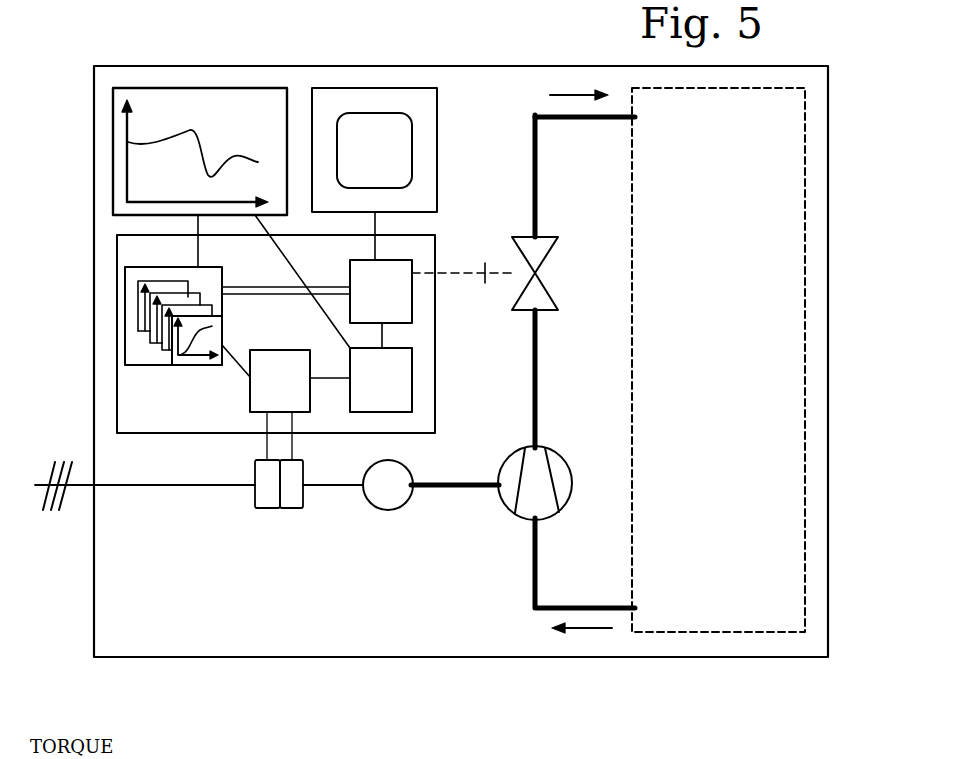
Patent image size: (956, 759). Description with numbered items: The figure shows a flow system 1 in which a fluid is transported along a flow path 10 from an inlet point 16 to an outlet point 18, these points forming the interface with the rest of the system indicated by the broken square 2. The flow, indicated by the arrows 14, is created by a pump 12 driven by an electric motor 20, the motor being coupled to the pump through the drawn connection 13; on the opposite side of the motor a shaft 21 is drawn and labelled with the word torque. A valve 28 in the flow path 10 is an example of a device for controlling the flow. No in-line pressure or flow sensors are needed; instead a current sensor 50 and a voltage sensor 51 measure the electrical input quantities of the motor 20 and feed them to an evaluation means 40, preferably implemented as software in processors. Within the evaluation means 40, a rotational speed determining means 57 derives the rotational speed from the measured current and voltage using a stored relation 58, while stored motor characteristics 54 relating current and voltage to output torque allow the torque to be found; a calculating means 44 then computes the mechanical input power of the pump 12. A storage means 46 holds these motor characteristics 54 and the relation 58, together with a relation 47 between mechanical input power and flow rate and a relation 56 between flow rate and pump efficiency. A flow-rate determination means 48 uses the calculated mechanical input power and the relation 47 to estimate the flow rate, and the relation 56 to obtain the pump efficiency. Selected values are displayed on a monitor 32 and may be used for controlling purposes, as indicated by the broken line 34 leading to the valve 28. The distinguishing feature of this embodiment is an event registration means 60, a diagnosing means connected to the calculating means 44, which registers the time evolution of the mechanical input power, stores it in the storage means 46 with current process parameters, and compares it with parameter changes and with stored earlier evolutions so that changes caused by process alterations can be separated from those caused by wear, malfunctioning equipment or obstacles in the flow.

The flow system 1 is at (800, 657).
The broken square 2 is at (720, 632).
The flow path 10 is at (537, 180).
The pump 12 is at (540, 510).
The drive shaft 13 is at (418, 490).
The arrows 14 is at (563, 94).
The inlet point 16 is at (637, 608).
The outlet point 18 is at (637, 117).
The electric motor 20 is at (390, 510).
The input shaft / torque input 21 is at (145, 486).
The valve 28 is at (545, 304).
The monitor 32 is at (428, 120).
The broken line 34 is at (452, 274).
The evaluation means 40 is at (428, 243).
The calculating means 44 is at (407, 387).
The storage means 46 is at (172, 267).
The relation between mechanical input power and flow rate 47 is at (150, 340).
The flow-rate determination means 48 is at (350, 284).
The current sensor 50 is at (267, 509).
The voltage sensor 51 is at (292, 500).
The motor characteristics 54 is at (165, 348).
The relation between flow rate and pump efficiency 56 is at (210, 282).
The rotational speed determining means 57 is at (258, 366).
The relation between input current and voltage and rotational speed 58 is at (215, 366).
The event registration means 60 is at (222, 108).